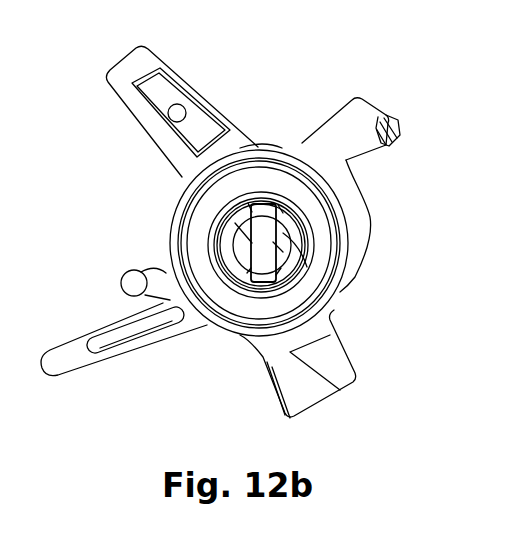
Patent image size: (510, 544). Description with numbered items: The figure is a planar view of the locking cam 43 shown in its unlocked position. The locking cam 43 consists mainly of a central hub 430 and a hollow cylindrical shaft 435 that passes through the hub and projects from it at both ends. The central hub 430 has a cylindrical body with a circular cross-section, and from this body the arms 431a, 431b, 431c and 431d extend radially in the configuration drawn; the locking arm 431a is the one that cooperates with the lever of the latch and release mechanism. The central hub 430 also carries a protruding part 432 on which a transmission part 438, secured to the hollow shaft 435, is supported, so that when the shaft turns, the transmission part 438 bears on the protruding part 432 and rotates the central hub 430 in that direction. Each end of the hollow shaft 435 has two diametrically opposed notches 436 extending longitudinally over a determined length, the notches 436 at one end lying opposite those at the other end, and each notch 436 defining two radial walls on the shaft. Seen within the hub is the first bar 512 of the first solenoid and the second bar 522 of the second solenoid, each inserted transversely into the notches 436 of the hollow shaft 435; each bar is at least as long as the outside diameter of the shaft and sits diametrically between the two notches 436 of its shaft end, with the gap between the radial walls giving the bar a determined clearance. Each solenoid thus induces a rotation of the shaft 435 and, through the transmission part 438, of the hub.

The locking cam 43 is at (78, 113).
The central hub 430 is at (284, 150).
The locking arm 431a is at (186, 78).
The arm 431b is at (121, 340).
The arm 431c is at (273, 365).
The arm 431d is at (350, 102).
The protruding part 432 is at (147, 320).
The hollow cylindrical shaft 435 is at (303, 253).
The notch 436 is at (278, 250).
The transmission part 438 is at (128, 280).
The first bar 512 is at (278, 250).
The second bar 522 is at (262, 229).